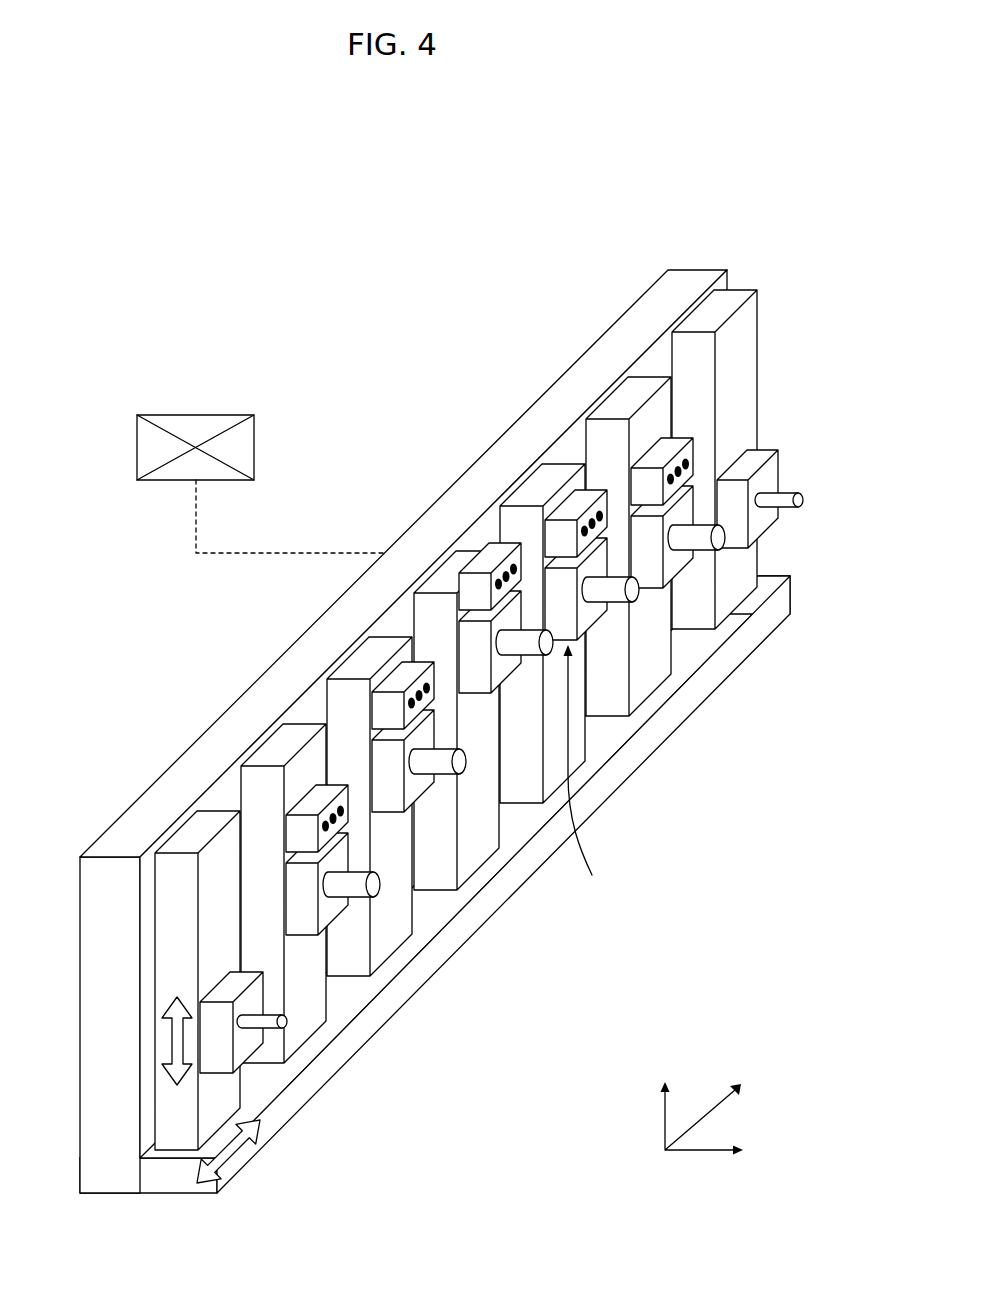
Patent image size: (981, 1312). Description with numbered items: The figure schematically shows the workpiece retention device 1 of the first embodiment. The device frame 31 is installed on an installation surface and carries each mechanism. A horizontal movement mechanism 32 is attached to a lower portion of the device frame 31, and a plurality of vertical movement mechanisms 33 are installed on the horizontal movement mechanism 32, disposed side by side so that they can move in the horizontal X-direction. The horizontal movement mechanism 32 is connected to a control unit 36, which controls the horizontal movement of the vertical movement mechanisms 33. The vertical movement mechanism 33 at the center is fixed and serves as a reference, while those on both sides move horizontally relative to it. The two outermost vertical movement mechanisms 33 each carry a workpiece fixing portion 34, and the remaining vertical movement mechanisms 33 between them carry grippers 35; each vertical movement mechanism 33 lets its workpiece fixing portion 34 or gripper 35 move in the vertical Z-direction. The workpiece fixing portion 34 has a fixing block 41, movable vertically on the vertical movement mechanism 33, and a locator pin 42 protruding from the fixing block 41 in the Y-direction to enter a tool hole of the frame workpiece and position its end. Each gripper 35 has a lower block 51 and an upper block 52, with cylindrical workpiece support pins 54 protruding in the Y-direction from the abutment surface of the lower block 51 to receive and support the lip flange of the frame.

The workpiece retention device 1 is at (303, 370).
The device frame 31 is at (104, 834).
The horizontal movement mechanism 32 is at (742, 642).
The vertical movement mechanism 33 is at (287, 750).
The workpiece fixing portion 34 is at (242, 1040).
The gripper 35 is at (584, 776).
The control unit 36 is at (196, 413).
The fixing block 41 is at (215, 1016).
The locator pin 42 is at (288, 1022).
The lower block 51 is at (560, 578).
The upper block 52 is at (575, 507).
The workpiece support pin 54 is at (617, 600).